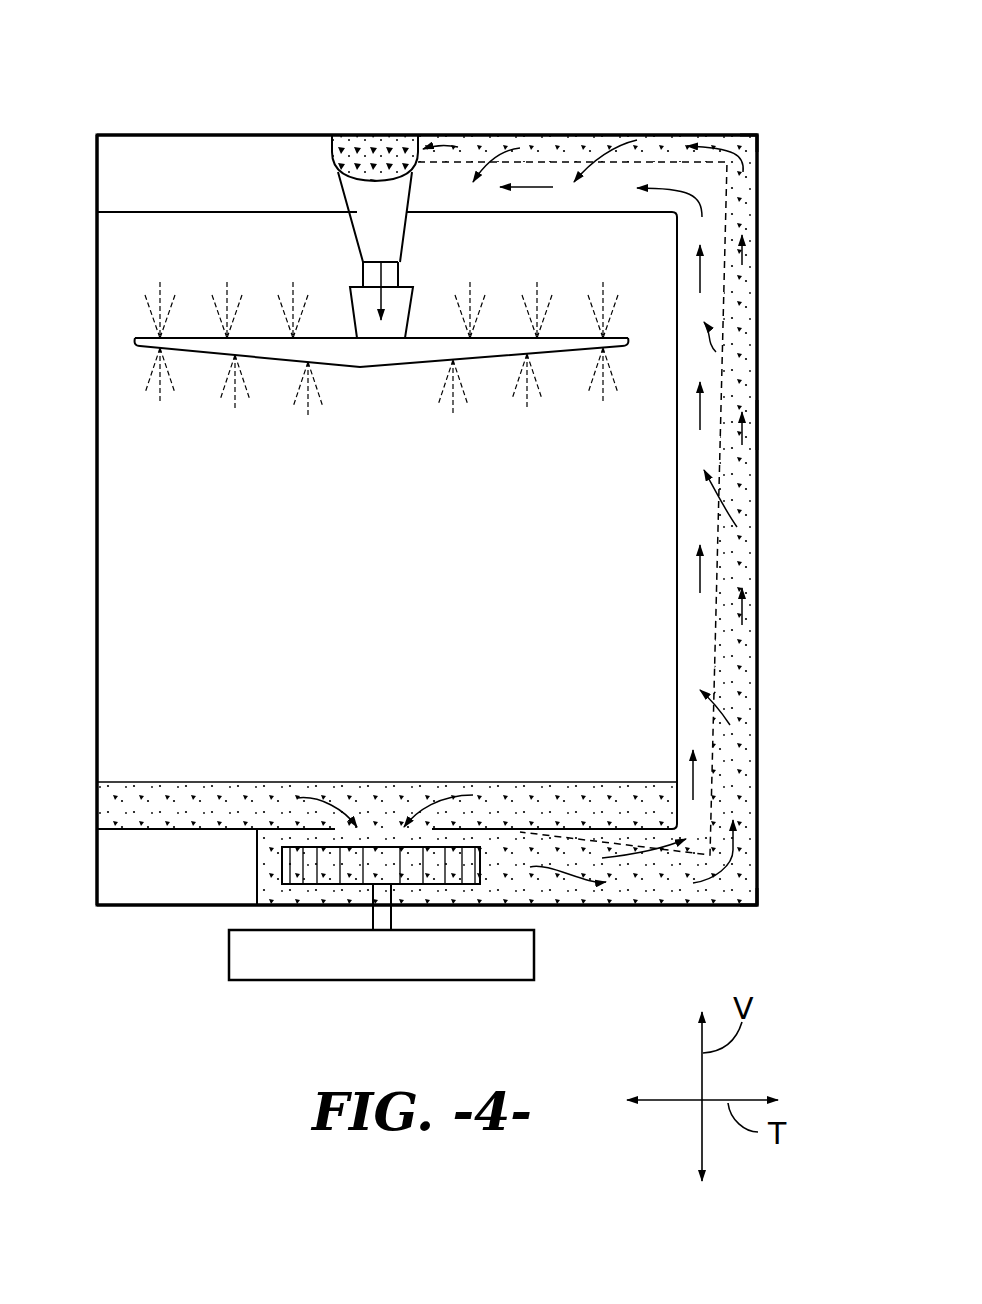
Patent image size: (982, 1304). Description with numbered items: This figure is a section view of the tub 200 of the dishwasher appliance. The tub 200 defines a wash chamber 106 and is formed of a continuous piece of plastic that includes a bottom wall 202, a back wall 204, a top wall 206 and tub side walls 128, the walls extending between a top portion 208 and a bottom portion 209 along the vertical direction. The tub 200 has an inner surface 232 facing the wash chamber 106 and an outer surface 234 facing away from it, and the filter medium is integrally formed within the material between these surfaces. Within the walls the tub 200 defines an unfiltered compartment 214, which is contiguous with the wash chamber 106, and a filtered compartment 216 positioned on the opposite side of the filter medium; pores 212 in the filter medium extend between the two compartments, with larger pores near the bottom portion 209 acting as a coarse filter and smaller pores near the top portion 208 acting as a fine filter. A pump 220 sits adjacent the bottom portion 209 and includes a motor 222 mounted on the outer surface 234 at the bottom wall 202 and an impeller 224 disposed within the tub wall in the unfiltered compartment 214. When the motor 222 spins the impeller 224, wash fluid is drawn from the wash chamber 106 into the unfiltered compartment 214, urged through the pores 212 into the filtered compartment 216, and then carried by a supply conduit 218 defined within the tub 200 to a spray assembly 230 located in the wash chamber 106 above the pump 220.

The tub 200 is at (416, 454).
The wash chamber 106 is at (140, 577).
The tub side walls 128 is at (411, 585).
The bottom wall 202 is at (135, 907).
The back wall 204 is at (759, 496).
The top wall 206 is at (606, 134).
The top portion 208 is at (762, 135).
The bottom portion 209 is at (762, 906).
The pores 212 is at (730, 212).
The unfiltered compartment 214 is at (474, 146).
The filtered compartment 216 is at (583, 199).
The supply conduit 218 is at (355, 245).
The pump 220 is at (382, 915).
The motor 222 is at (513, 950).
The impeller 224 is at (292, 862).
The spray assembly 230 is at (387, 353).
The inner surface 232 is at (674, 461).
The outer surface 234 is at (759, 425).